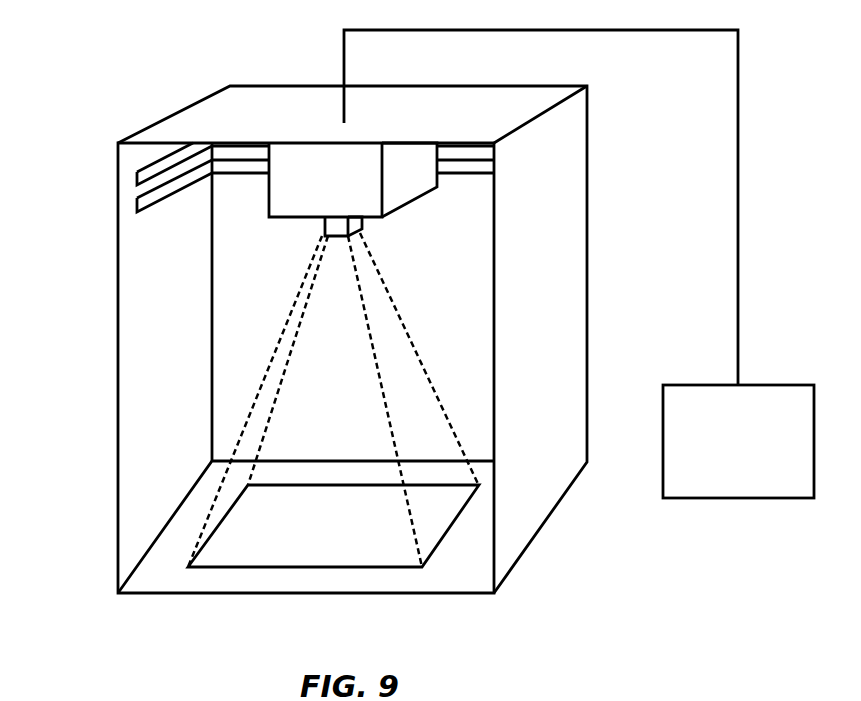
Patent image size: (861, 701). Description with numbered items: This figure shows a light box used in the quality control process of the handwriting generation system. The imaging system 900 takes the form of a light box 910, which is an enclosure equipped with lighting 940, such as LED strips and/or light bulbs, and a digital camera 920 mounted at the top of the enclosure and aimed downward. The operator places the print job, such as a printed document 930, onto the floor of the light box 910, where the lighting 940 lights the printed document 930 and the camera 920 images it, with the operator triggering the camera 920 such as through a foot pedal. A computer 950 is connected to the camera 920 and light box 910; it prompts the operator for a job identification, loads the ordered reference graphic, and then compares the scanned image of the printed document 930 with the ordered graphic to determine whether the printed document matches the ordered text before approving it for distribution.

The imaging system 900 is at (116, 60).
The light box 910 is at (560, 85).
The digital camera 920 is at (322, 227).
The printed document 930 is at (445, 540).
The lighting 940 is at (184, 216).
The computer 950 is at (775, 385).